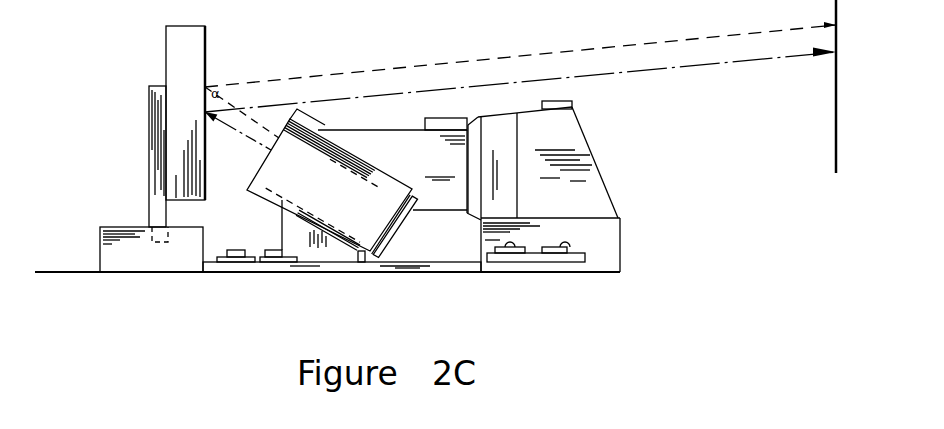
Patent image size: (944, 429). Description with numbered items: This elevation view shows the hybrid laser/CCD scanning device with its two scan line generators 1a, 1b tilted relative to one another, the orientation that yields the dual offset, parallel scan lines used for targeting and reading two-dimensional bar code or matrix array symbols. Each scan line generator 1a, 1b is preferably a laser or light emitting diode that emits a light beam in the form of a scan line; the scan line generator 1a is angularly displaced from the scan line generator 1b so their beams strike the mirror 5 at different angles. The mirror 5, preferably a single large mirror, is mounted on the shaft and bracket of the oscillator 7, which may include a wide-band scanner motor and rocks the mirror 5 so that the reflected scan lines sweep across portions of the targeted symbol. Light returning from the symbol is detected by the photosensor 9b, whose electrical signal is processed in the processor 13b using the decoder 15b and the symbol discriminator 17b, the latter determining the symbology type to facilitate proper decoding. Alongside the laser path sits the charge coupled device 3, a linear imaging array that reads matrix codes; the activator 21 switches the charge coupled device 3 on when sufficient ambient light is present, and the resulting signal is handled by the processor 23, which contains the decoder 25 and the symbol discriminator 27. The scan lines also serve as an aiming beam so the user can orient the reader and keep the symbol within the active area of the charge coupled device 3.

The mirror 5 is at (197, 38).
The oscillator 7 is at (158, 100).
The scan line generator 1a is at (308, 121).
The scan line generator 1b is at (365, 182).
The activator 21 is at (450, 117).
The photosensor 9b is at (572, 102).
The charge coupled device 3 is at (447, 195).
The symbol discriminator 27 is at (233, 250).
The decoder 25 is at (272, 250).
The processor 23 is at (263, 272).
The symbol discriminator 17b is at (515, 255).
The processor 13b is at (539, 255).
The decoder 15b is at (579, 262).